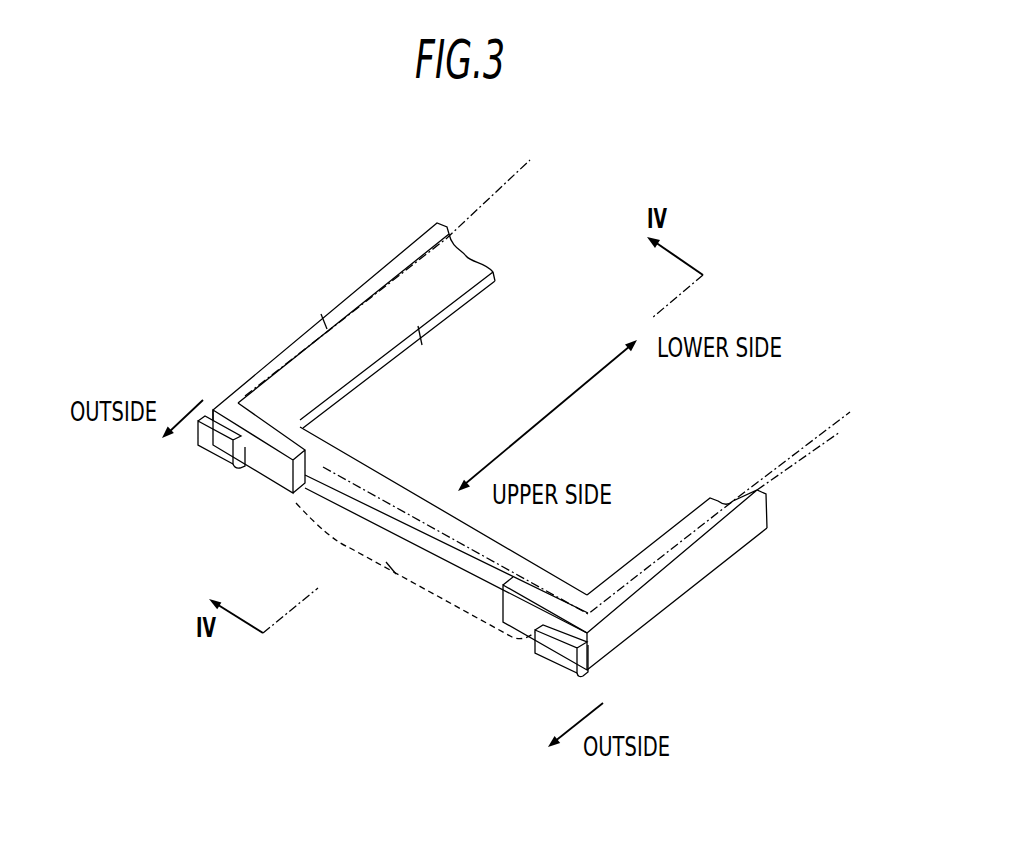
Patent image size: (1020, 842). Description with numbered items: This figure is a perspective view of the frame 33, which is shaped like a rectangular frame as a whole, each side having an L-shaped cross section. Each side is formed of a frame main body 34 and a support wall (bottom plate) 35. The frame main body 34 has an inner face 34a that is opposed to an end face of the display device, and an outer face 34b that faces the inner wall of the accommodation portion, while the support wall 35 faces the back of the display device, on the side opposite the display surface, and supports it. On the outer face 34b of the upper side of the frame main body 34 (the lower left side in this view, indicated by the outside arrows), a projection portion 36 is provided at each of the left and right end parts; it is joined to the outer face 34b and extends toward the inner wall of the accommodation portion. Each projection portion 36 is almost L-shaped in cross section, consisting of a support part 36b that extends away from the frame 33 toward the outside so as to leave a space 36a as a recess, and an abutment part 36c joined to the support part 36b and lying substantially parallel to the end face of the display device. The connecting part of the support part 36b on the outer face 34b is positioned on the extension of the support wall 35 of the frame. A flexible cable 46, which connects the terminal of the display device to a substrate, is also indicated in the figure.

The frame 33 is at (361, 275).
The frame main body 34 is at (690, 567).
The inner face 34a is at (322, 318).
The outer face 34b is at (282, 467).
The support wall (bottom plate) 35 is at (420, 334).
The projection portion 36 is at (372, 541).
The space 36a is at (243, 452).
The support part 36b is at (243, 466).
The abutment part 36c is at (209, 443).
The flexible cable 46 is at (395, 568).